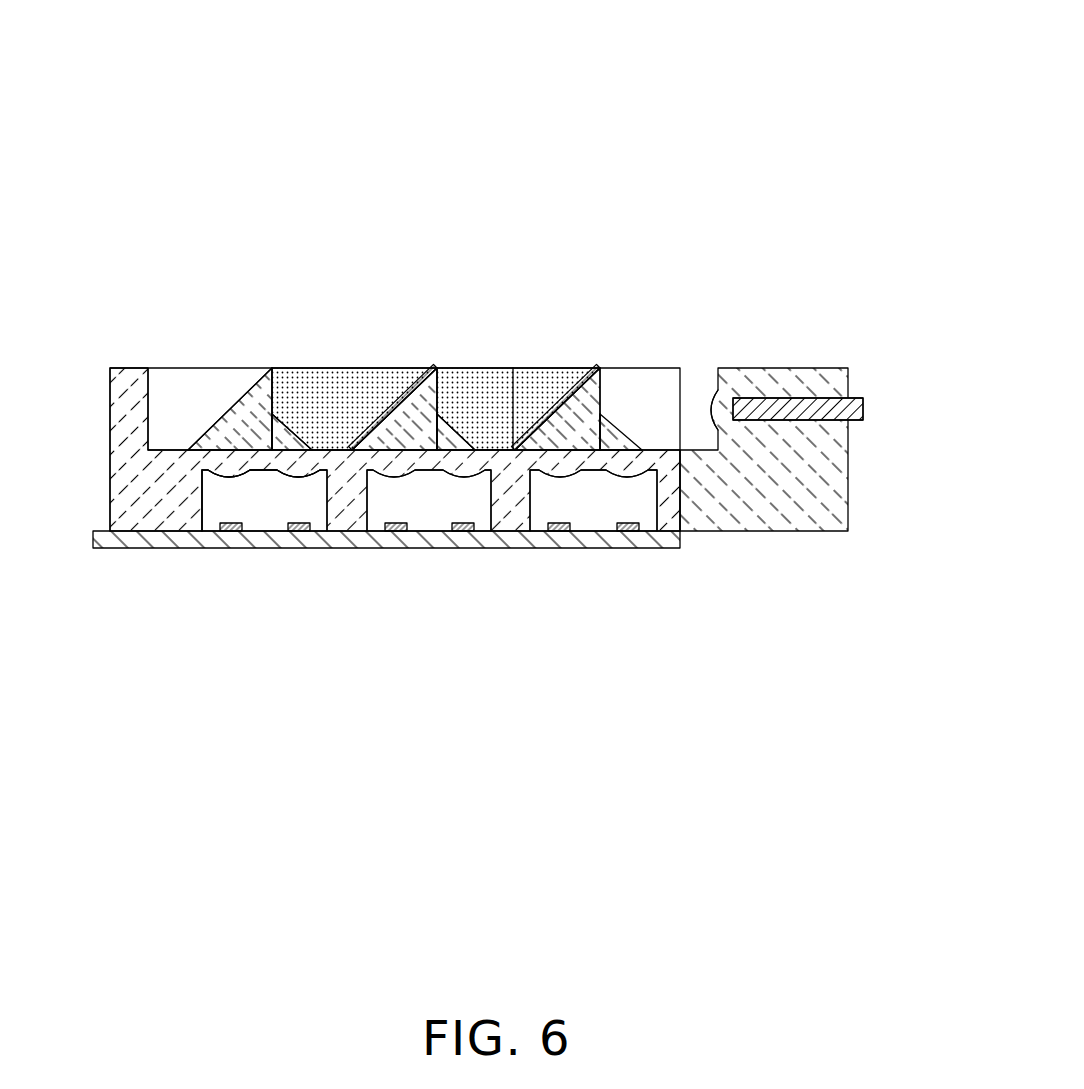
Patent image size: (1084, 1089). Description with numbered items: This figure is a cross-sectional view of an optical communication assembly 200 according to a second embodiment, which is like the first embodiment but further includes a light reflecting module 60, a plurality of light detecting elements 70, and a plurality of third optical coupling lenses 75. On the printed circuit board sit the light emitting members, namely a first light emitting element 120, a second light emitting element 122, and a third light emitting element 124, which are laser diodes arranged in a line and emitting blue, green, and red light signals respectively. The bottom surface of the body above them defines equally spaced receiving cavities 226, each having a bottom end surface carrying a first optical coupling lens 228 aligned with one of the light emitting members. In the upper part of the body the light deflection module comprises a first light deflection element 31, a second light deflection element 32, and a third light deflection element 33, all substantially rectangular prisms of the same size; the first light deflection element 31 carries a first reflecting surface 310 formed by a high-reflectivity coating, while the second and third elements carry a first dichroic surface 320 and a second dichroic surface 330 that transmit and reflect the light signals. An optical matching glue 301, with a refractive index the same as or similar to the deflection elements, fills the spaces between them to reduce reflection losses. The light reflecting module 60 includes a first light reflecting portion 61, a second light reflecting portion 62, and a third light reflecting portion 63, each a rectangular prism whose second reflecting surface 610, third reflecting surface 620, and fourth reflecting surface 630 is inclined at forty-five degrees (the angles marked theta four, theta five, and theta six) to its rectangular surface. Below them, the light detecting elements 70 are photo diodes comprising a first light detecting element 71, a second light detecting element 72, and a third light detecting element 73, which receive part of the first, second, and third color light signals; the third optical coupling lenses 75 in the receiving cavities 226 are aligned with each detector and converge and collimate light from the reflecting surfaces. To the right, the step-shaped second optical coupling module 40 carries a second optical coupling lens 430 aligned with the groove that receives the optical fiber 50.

The optical communication assembly 200 is at (460, 46).
The light reflecting module 60 is at (633, 232).
The first light reflecting portion 61 is at (300, 425).
The second light reflecting portion 62 is at (455, 420).
The third light reflecting portion 63 is at (608, 415).
The second reflecting surface 610 is at (280, 430).
The third reflecting surface 620 is at (500, 420).
The fourth reflecting surface 630 is at (625, 430).
The first light deflection element 31 is at (213, 425).
The second light deflection element 32 is at (385, 410).
The third light deflection element 33 is at (560, 415).
The first reflecting surface 310 is at (245, 393).
The first dichroic surface 320 is at (445, 430).
The second dichroic surface 330 is at (540, 410).
The optical matching glue 301 is at (372, 400).
The second optical coupling module 40 is at (817, 493).
The second optical coupling lens 430 is at (712, 400).
The optical fiber 50 is at (860, 398).
The light detecting elements 70 is at (653, 638).
The first light detecting element 71 is at (297, 531).
The second light detecting element 72 is at (462, 532).
The third light detecting element 73 is at (627, 532).
The third optical coupling lenses 75 is at (287, 475).
The first light emitting element 120 is at (232, 532).
The second light emitting element 122 is at (395, 530).
The third light emitting element 124 is at (557, 530).
The receiving cavities 226 is at (205, 483).
The first optical coupling lens 228 is at (223, 473).